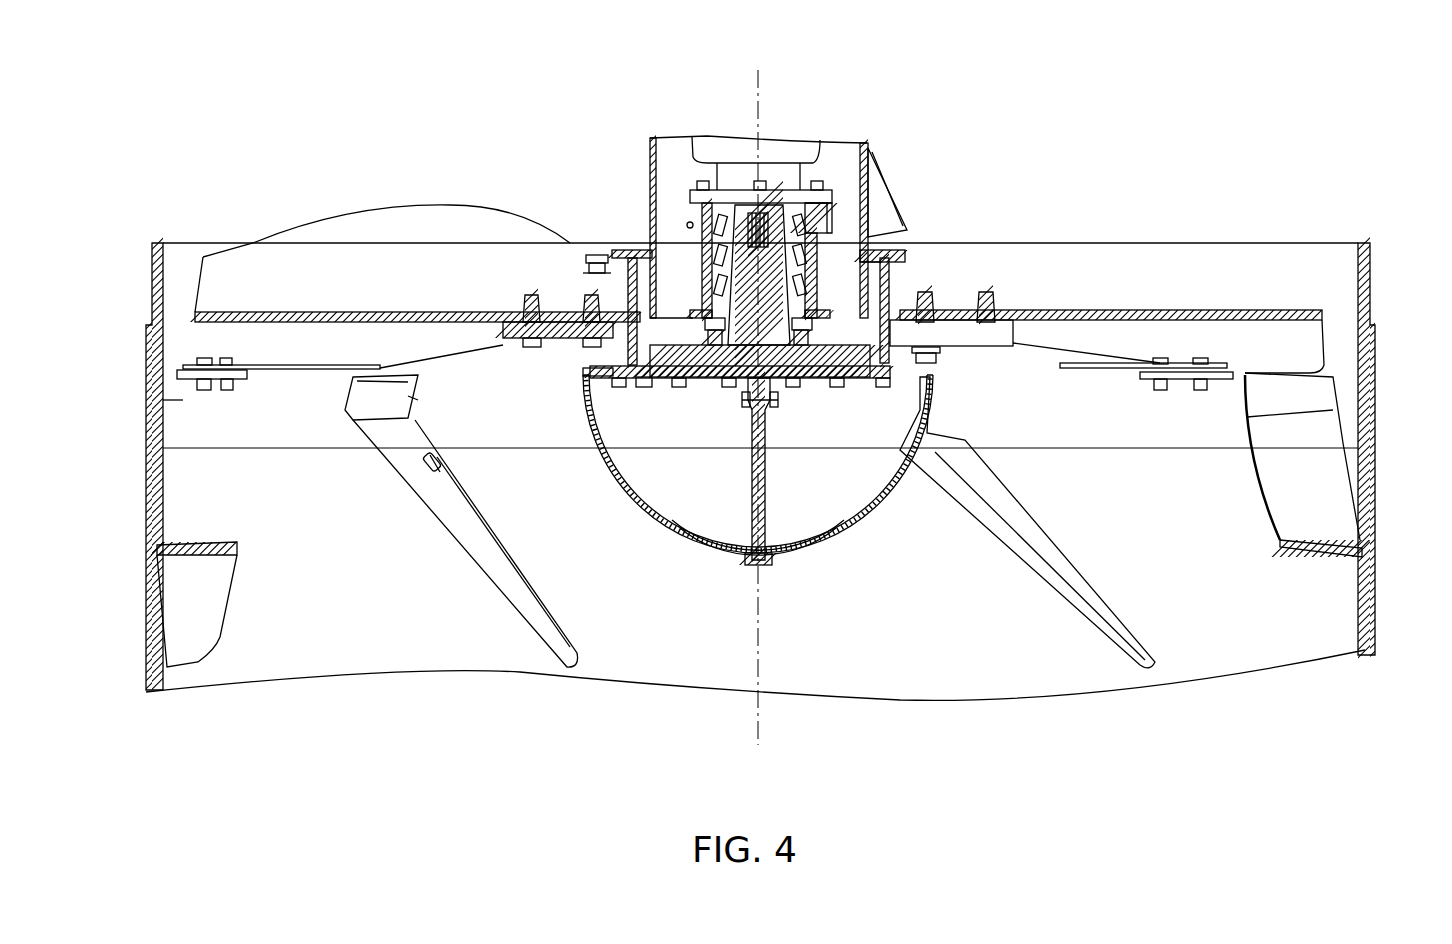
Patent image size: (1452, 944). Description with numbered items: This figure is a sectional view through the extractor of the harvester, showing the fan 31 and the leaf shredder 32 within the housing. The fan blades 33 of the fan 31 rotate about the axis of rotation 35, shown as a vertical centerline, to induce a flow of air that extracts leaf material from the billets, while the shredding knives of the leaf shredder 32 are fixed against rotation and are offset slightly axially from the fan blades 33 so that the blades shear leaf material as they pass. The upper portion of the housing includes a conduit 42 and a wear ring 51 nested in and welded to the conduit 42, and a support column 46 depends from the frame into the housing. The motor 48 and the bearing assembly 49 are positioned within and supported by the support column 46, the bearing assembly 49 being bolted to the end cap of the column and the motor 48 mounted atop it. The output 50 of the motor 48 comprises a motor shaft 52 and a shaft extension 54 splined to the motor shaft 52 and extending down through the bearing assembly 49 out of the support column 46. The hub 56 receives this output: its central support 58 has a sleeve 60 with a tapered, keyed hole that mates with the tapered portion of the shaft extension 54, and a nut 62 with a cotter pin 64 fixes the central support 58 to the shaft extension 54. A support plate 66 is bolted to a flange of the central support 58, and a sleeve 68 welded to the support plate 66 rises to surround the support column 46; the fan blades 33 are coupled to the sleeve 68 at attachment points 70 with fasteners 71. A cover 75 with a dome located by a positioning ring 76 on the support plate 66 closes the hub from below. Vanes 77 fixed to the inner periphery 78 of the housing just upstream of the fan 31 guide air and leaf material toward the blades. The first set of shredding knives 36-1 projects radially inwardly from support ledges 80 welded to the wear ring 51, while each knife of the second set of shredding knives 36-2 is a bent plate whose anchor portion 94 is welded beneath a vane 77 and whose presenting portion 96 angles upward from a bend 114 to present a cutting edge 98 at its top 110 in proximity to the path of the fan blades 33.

The fan 31 is at (253, 212).
The leaf shredder 32 is at (1215, 606).
The fan blades 33 is at (332, 238).
The axis of rotation 35 is at (760, 640).
The first set of shredding knives 36-1 is at (258, 368).
The second set of shredding knives 36-2 is at (383, 433).
The conduit 42 is at (150, 470).
The support column 46 is at (650, 180).
The motor 48 is at (782, 152).
The bearing assembly 49 is at (690, 245).
The output 50 is at (793, 277).
The wear ring 51 is at (1370, 265).
The motor shaft 52 is at (752, 215).
The shaft extension 54 is at (793, 372).
The hub 56 is at (903, 273).
The central support 58 is at (850, 333).
The sleeve 60 is at (710, 370).
The nut 62 is at (778, 423).
The cotter pin 64 is at (787, 383).
The support plate 66 is at (590, 367).
The sleeve 68 is at (630, 290).
The attachment points 70 is at (558, 347).
The fasteners 71 is at (583, 270).
The cover 75 is at (620, 467).
The positioning ring 76 is at (641, 387).
The vanes 77 is at (190, 600).
The inner periphery 78 is at (167, 423).
The support ledges 80 is at (190, 377).
The anchor portion 94 is at (455, 460).
The presenting portion 96 is at (413, 398).
The cutting edge 98 is at (373, 372).
The top 110 is at (408, 375).
The bend 114 is at (363, 408).